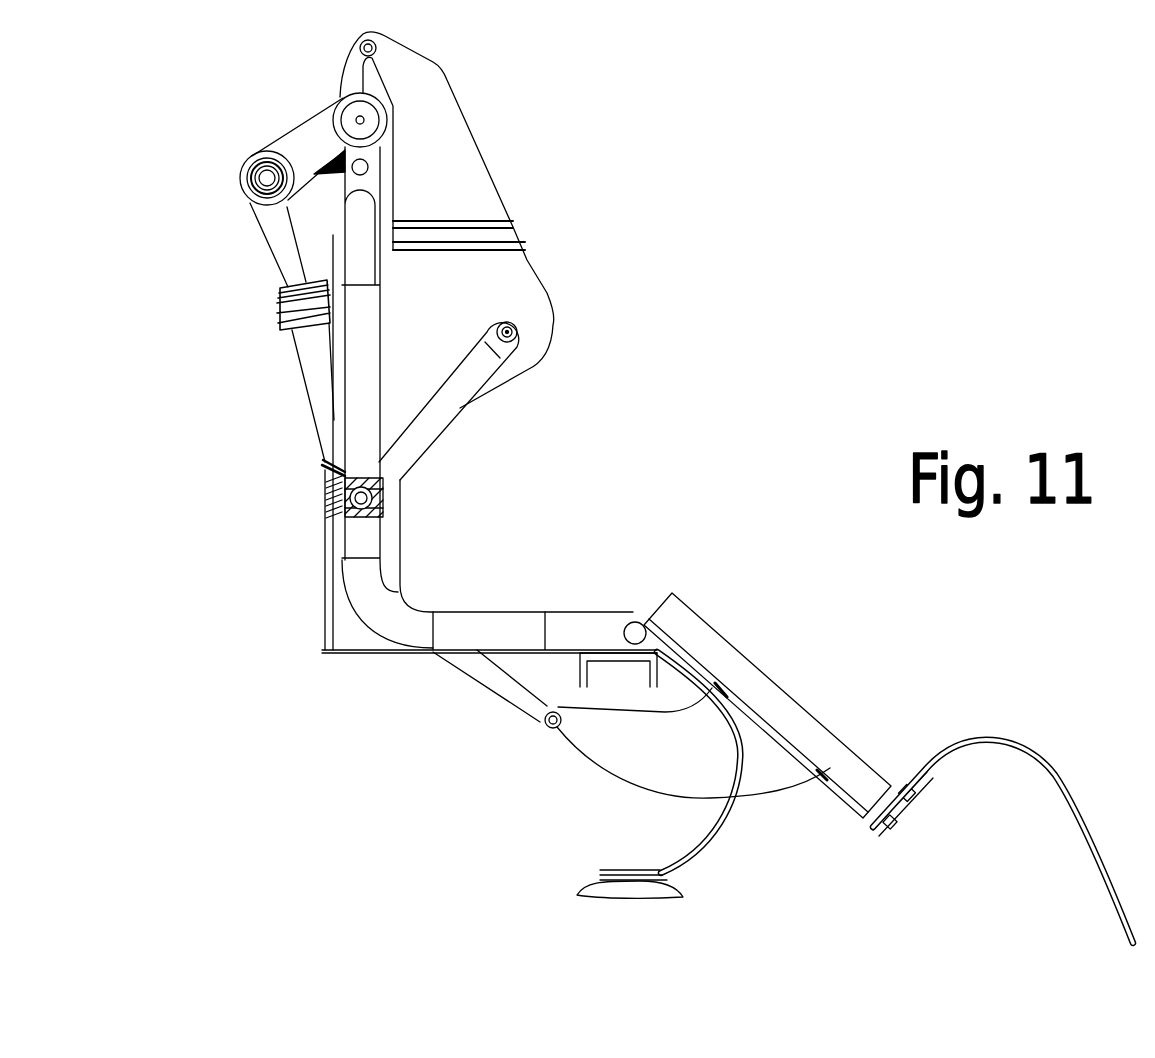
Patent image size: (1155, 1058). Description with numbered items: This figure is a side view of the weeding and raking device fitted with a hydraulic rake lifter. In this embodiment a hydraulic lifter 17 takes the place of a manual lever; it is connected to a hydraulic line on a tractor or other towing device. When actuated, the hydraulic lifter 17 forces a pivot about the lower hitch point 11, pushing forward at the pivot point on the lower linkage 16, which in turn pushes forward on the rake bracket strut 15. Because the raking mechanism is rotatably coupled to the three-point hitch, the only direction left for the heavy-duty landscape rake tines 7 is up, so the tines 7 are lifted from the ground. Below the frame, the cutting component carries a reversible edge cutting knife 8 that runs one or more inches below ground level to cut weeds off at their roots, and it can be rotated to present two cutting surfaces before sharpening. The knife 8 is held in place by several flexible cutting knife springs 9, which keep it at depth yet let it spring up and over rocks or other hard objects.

The heavy-duty landscape rake tines 7 is at (1057, 772).
The reversible edge cutting knife 8 is at (583, 892).
The cutting knife springs 9 is at (723, 830).
The lower hitch point 11 is at (399, 495).
The rake bracket strut 15 is at (670, 743).
The lower linkage 16 is at (510, 690).
The hydraulic lifter 17 is at (287, 329).